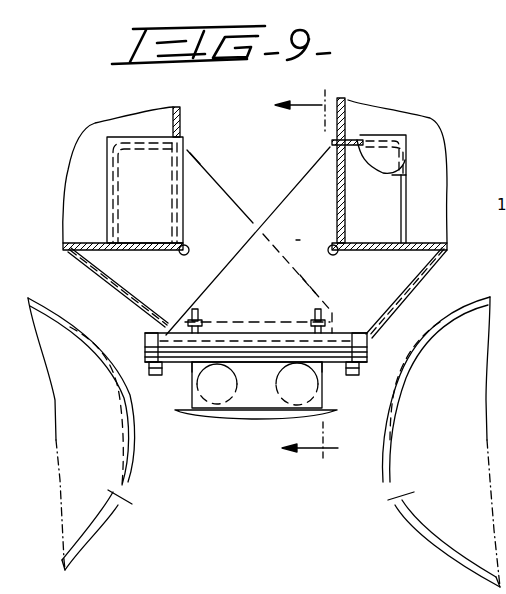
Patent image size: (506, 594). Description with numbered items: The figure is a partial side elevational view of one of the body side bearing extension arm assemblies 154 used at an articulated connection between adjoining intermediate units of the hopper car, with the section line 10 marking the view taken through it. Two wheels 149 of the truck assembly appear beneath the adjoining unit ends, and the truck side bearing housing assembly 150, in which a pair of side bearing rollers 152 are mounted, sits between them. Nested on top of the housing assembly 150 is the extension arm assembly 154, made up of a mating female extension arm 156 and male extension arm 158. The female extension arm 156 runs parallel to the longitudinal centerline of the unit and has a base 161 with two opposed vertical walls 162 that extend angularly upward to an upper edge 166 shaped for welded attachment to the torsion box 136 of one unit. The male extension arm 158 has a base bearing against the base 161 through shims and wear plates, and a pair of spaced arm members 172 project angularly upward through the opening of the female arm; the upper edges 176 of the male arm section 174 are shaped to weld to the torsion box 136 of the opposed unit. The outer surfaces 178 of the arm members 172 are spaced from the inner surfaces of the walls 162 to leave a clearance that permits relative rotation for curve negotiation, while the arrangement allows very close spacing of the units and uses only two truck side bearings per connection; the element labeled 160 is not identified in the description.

The section line 10- 10 is at (306, 283).
The torsion box/end sill 136 is at (148, 152).
The wheels 149 is at (122, 508).
The truck side bearing housing assembly 150 is at (200, 409).
The side bearing rollers 152 is at (192, 372).
The body side bearing extension arm assembly 154 is at (250, 217).
The female extension arm 156 is at (298, 246).
The male extension arm 158 is at (214, 181).
The angled support bar 160 is at (432, 272).
The base 161 is at (258, 352).
The vertical walls 162 is at (276, 293).
The upper edge 166 is at (342, 163).
The spaced arm members 172 is at (316, 278).
The male arm section 174 is at (200, 166).
The upper edges 176 is at (92, 243).
The outer surfaces 178 is at (137, 281).